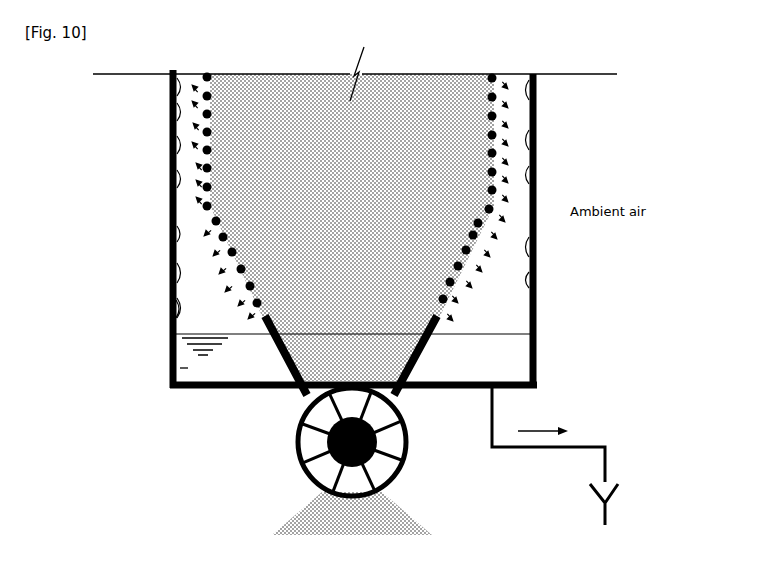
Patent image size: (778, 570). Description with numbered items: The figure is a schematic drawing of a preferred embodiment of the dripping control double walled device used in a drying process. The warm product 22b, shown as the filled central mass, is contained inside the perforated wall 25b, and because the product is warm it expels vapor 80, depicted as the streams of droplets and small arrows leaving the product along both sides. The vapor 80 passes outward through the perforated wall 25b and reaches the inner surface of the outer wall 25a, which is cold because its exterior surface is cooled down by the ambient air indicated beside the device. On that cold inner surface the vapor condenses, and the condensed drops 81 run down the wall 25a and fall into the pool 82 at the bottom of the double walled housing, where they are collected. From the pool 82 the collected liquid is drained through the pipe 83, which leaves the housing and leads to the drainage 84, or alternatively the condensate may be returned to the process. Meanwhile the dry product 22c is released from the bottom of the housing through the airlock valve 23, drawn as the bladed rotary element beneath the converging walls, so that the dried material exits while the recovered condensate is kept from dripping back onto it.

The product 22b is at (418, 136).
The dry product 22c is at (308, 507).
The airlock valve 23 is at (406, 450).
The wall 25a is at (171, 152).
The perforated wall 25b is at (176, 97).
The vapor 80 is at (220, 251).
The condensed drops 81 is at (172, 282).
The pool 82 is at (180, 369).
The pipe 83 is at (606, 452).
The drainage 84 is at (608, 511).